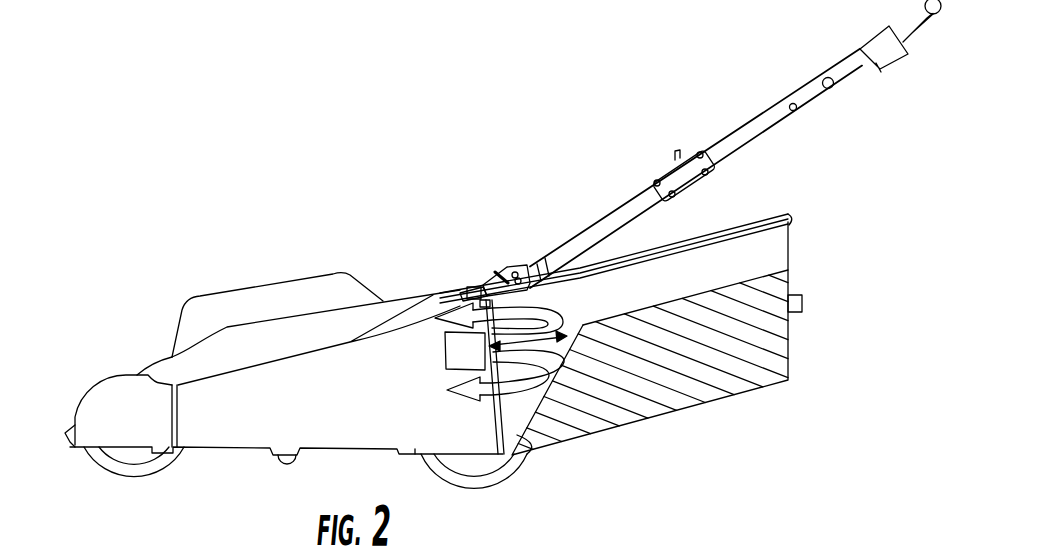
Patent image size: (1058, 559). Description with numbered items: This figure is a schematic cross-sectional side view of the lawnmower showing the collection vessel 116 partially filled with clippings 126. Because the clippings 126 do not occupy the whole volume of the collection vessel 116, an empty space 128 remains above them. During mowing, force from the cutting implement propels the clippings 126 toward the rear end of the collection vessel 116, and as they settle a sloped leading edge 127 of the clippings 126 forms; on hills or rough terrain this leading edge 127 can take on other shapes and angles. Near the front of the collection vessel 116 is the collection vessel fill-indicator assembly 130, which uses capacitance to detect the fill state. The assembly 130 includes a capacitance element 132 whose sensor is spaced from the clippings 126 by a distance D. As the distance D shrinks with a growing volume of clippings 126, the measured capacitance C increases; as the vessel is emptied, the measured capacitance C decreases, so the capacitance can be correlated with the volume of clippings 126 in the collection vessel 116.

The collection vessel 116 is at (742, 226).
The clippings 126 is at (657, 362).
The sloped leading edge 127 is at (524, 434).
The empty space 128 is at (770, 253).
The collection vessel fill-indicator assembly 130 is at (459, 313).
The capacitance element 132 is at (443, 355).
The measured capacitance C is at (517, 308).
The distance D is at (554, 339).